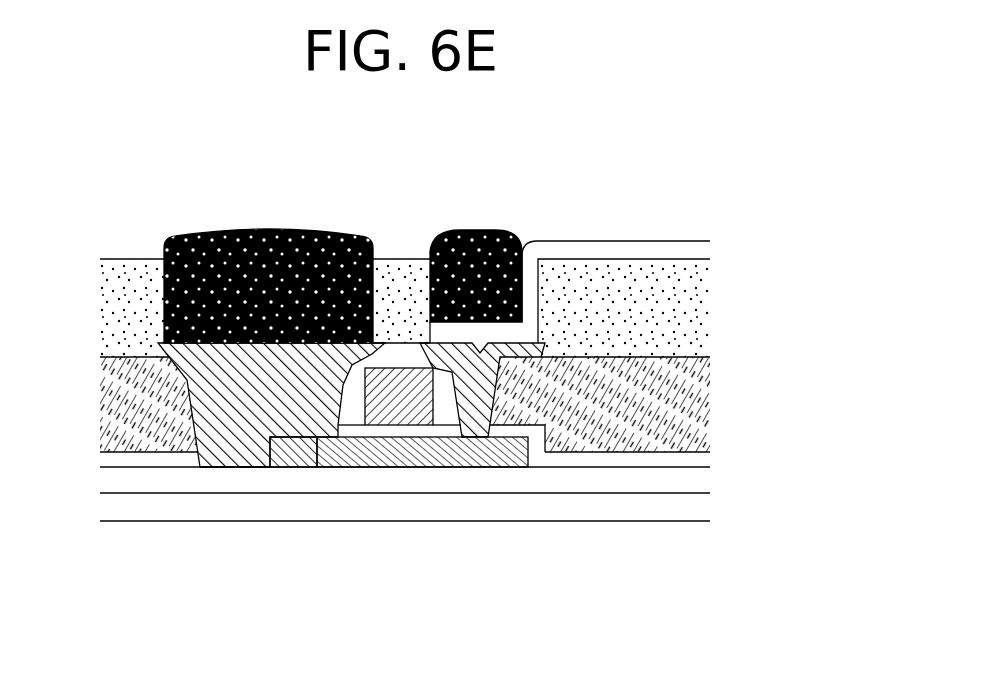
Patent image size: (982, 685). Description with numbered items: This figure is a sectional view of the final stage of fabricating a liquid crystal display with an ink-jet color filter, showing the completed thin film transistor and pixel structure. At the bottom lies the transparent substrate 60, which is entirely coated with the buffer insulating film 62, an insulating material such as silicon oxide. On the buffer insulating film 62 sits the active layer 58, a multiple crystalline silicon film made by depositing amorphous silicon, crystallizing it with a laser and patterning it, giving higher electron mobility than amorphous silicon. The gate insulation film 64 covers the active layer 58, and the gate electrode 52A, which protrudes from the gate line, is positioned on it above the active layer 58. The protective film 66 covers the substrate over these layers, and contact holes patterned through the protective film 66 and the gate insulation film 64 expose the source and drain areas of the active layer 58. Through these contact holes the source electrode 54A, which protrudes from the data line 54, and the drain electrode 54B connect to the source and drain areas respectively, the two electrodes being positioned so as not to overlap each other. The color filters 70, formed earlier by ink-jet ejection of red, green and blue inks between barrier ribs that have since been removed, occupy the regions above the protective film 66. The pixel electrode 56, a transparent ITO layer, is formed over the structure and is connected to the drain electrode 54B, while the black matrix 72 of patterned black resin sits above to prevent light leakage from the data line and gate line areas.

The gate electrode 52A is at (433, 397).
The data line 54 is at (222, 467).
The source electrode 54A is at (318, 467).
The drain electrode 54B is at (545, 357).
The pixel electrode 56 is at (600, 241).
The active layer 58 is at (413, 467).
The transparent substrate 60 is at (283, 512).
The buffer insulating film 62 is at (485, 490).
The gate insulation film 64 is at (700, 462).
The protective film 66 is at (698, 423).
The color filters 70 is at (697, 290).
The black matrix 72 is at (440, 240).